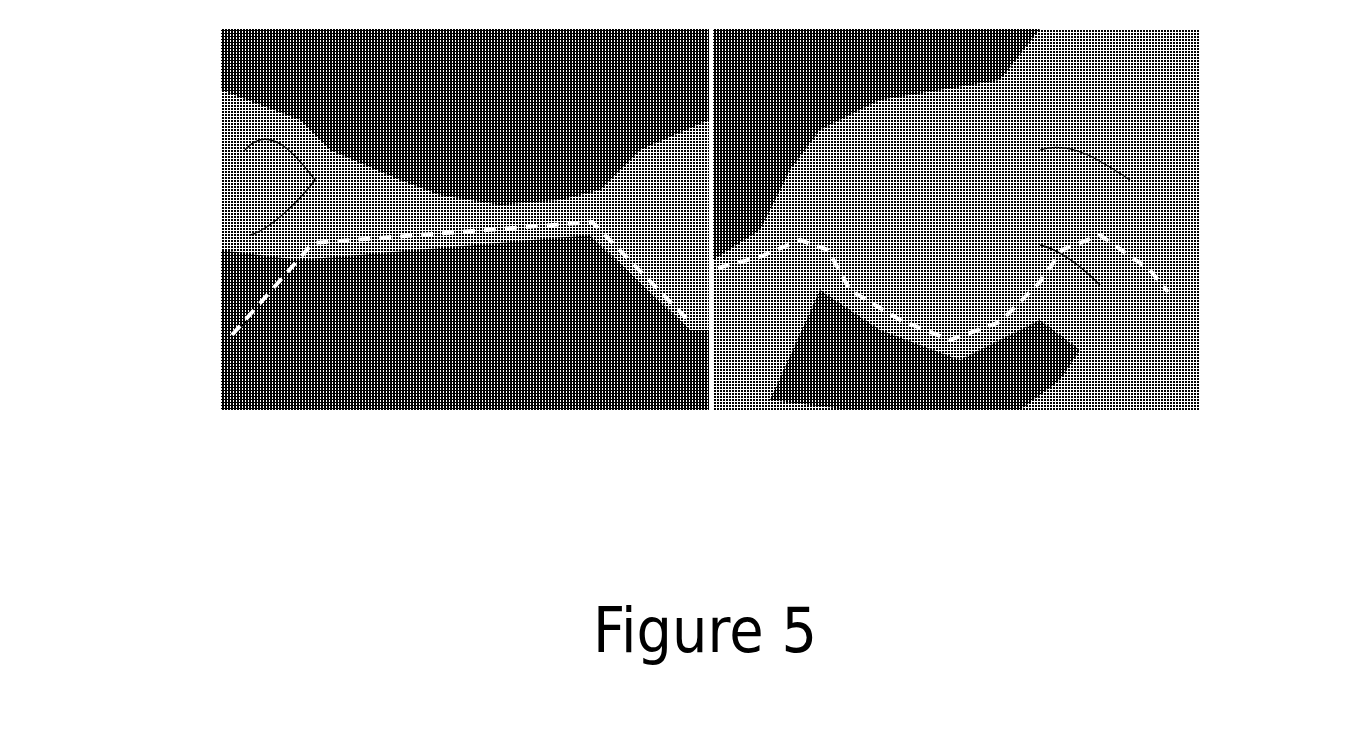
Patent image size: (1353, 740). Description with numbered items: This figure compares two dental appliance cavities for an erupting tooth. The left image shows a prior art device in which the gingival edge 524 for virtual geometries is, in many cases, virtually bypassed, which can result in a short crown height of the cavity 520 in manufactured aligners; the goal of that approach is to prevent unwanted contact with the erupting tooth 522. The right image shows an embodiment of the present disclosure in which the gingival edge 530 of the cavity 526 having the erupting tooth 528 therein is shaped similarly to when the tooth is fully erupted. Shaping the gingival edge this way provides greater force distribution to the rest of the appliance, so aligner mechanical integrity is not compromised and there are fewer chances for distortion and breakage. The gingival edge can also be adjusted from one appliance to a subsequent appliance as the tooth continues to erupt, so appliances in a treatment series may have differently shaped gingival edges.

The cavity 520 is at (318, 180).
The erupting tooth 522 is at (262, 300).
The gingival edge 524 is at (405, 258).
The cavity 526 is at (1075, 180).
The erupting tooth 528 is at (1040, 250).
The gingival edge 530 is at (945, 345).